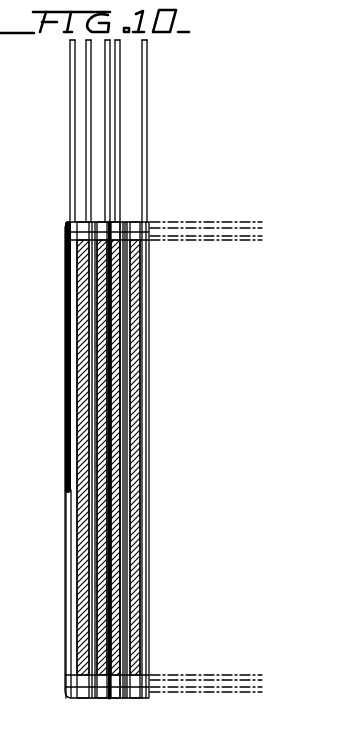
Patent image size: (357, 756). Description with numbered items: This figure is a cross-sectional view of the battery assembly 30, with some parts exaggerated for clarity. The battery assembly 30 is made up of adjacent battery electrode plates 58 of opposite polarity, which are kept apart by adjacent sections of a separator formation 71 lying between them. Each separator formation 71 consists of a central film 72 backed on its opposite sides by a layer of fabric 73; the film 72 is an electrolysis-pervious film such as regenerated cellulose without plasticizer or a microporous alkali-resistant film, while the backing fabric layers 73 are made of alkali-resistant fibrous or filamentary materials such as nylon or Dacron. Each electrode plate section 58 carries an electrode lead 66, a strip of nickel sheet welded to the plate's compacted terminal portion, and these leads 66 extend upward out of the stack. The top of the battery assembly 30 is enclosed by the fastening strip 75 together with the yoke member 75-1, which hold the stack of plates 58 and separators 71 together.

The electrode lead 66 is at (145, 161).
The fastening strip 75 is at (174, 221).
The yoke member 75-1 is at (204, 231).
The electrode plate section 58 is at (90, 439).
The separator formation 71 is at (90, 539).
The central film 72 is at (137, 544).
The backing fabric layer 73 is at (126, 579).
The battery assembly 30 is at (49, 375).